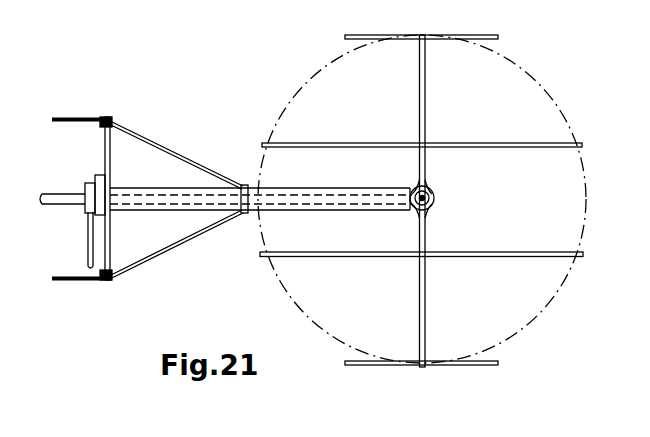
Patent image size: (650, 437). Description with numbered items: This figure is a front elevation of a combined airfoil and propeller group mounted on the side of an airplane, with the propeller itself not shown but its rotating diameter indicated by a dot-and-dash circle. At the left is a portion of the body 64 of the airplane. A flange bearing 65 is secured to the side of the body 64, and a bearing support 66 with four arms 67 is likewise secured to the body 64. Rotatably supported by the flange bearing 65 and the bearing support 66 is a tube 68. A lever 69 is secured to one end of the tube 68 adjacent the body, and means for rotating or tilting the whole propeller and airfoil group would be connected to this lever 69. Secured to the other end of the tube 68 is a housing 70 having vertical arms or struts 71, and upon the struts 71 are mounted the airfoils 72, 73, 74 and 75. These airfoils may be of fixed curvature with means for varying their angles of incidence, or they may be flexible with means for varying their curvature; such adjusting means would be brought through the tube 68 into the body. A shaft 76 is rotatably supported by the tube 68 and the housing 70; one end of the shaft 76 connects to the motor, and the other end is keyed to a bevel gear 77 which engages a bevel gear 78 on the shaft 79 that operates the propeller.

The body 64 is at (110, 168).
The flange bearing 65 is at (100, 185).
The bearing support 66 is at (245, 185).
The arms 67 is at (165, 148).
The tube 68 is at (170, 212).
The lever 69 is at (89, 244).
The housing 70 is at (436, 200).
The struts 71 is at (426, 106).
The airfoil 72 is at (478, 38).
The airfoil 73 is at (509, 145).
The airfoil 74 is at (502, 252).
The airfoil 75 is at (446, 360).
The shaft 76 is at (58, 198).
The bevel gear 77 is at (412, 194).
The bevel gear 78 is at (430, 190).
The shaft 79 is at (434, 206).